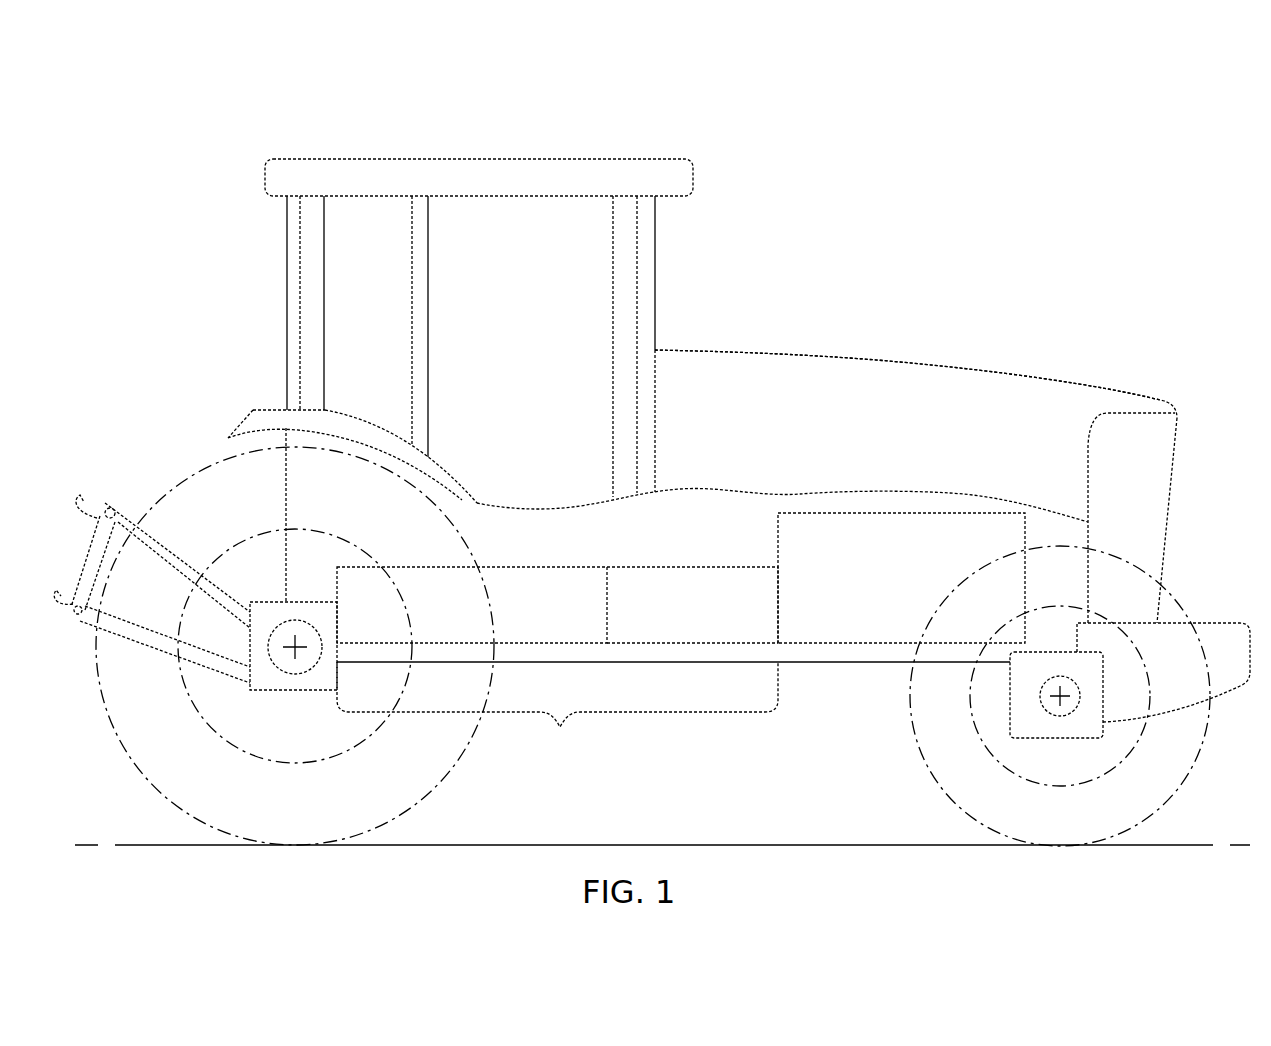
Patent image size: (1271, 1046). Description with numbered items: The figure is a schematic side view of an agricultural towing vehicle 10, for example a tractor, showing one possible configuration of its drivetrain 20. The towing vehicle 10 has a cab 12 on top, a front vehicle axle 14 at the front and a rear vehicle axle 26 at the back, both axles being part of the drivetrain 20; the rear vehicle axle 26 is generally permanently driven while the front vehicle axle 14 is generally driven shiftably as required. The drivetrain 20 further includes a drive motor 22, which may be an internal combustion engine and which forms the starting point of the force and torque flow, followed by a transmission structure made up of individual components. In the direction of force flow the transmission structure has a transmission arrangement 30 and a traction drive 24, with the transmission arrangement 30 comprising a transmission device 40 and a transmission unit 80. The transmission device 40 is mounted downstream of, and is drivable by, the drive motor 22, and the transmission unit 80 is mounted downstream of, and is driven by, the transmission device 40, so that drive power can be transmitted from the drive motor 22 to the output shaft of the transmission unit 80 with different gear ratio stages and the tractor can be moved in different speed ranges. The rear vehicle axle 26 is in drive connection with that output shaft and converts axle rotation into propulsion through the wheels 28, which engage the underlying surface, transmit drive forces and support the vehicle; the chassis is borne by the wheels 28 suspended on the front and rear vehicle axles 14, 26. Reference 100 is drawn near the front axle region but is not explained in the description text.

The agricultural towing vehicle 10 is at (947, 151).
The cab 12 is at (563, 185).
The front vehicle axle 14 is at (1075, 703).
The drivetrain 20 is at (684, 455).
The drive motor 22 is at (887, 592).
The traction drive 24 is at (286, 673).
The rear vehicle axle 26 is at (274, 624).
The wheels 28 is at (403, 770).
The transmission arrangement 30 is at (673, 711).
The transmission device 40 is at (678, 619).
The transmission unit 80 is at (505, 619).
The front hitch actuator 100 is at (310, 612).